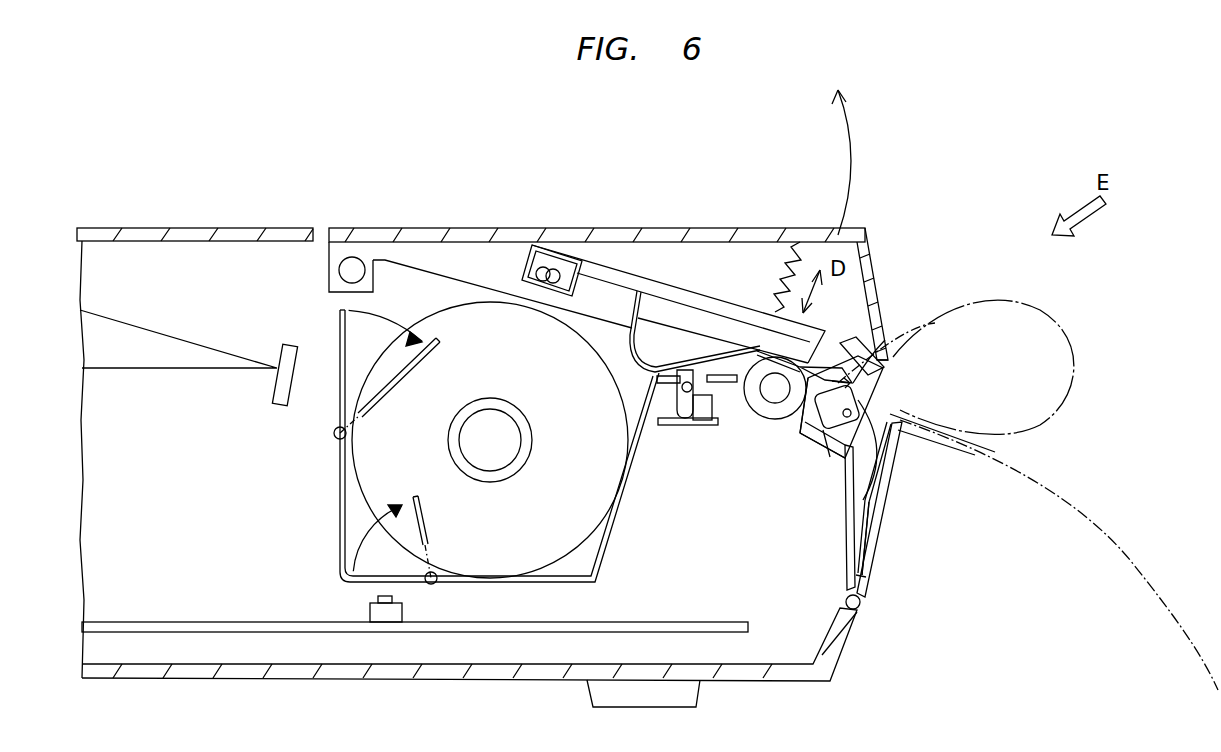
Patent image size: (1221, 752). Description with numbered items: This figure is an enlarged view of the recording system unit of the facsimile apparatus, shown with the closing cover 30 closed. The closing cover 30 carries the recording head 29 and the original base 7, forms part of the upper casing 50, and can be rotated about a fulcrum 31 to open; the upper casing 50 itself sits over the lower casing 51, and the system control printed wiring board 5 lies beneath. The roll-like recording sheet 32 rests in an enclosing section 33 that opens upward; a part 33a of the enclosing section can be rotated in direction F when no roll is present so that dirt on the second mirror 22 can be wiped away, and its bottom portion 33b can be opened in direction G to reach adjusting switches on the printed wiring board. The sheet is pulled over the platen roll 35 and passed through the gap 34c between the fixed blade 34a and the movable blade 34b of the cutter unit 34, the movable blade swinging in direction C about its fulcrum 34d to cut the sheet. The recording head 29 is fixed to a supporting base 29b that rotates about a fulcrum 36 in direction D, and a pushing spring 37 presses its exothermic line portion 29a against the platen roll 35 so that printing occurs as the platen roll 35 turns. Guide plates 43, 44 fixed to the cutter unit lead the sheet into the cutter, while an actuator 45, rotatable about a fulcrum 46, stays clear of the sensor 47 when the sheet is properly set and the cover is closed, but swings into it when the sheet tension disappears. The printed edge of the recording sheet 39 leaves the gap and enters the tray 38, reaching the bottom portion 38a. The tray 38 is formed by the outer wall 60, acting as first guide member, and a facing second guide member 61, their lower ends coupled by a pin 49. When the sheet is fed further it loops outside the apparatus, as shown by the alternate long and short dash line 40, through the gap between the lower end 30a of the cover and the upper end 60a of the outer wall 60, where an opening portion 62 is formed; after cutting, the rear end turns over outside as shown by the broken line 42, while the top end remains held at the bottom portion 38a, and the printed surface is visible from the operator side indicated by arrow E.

The system control printed wiring board 5 is at (212, 622).
The original base 7 is at (838, 232).
The second mirror 22 is at (288, 345).
The recording head 29 is at (712, 312).
The exothermic line portion 29a is at (775, 352).
The supporting base 29b is at (620, 272).
The closing cover 30 is at (468, 241).
The lower end of the recording cover 30a is at (889, 360).
The fulcrum 31 is at (352, 257).
The roll-like recording sheet 32 is at (365, 478).
The enclosing section 33 is at (340, 548).
The part of the enclosing section 33a is at (433, 352).
The bottom portion of the enclosing section 33b is at (425, 512).
The cutter unit 34 is at (882, 378).
The fixed blade 34a is at (858, 345).
The movable blade 34b is at (835, 432).
The gap 34c is at (812, 395).
The fulcrum 34d is at (842, 462).
The platen roll 35 is at (748, 410).
The fulcrum 36 is at (548, 268).
The pushing spring 37 is at (790, 243).
The tray 38 is at (884, 490).
The bottom portion of the tray 38a is at (862, 572).
The edge of the recording sheet 39 is at (868, 505).
The alternate long and short dash line 40 is at (1074, 330).
The broken line 42 is at (1136, 566).
The guide plate 43 is at (822, 375).
The guide plate 44 is at (775, 419).
The actuator 45 is at (683, 415).
The fulcrum 46 is at (657, 380).
The sensor 47 is at (705, 420).
The pin 49 is at (861, 605).
The upper casing 50 is at (184, 228).
The lower casing 51 is at (846, 640).
The outer wall 60 is at (896, 462).
The upper end of the outer wall 60a is at (912, 438).
The second guide member 61 is at (846, 530).
The opening portion 62 is at (902, 416).